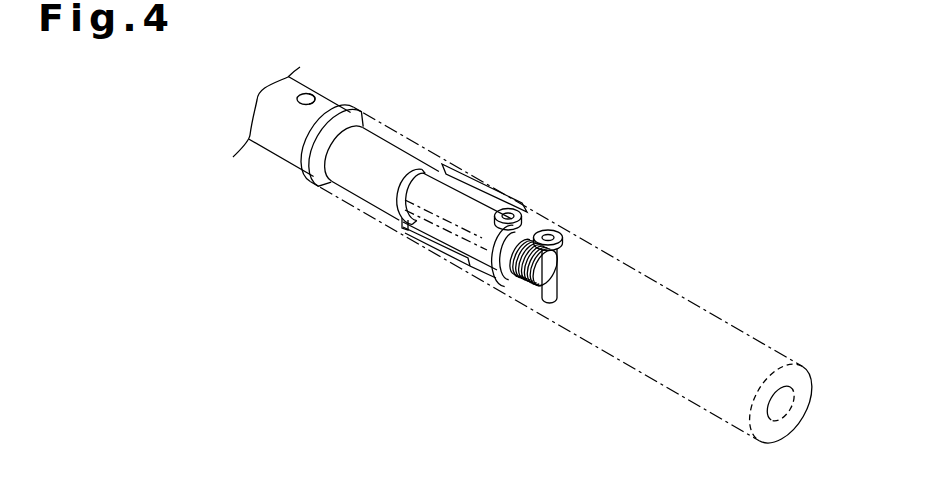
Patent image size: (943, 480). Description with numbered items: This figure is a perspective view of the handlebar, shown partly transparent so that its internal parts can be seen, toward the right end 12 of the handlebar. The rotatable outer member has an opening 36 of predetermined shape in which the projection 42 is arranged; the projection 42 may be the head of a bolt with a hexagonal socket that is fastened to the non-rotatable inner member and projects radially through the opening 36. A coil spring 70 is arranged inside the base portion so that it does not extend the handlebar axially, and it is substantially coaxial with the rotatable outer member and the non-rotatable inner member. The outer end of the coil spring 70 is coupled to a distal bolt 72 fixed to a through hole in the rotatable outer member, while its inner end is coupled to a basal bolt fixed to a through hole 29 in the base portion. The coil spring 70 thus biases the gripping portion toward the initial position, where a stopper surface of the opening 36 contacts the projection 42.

The right end 12 is at (806, 413).
The through hole 29 is at (316, 90).
The opening 36 is at (460, 216).
The projection 42 is at (496, 207).
The coil spring 70 is at (524, 284).
The distal bolt 72 is at (550, 231).